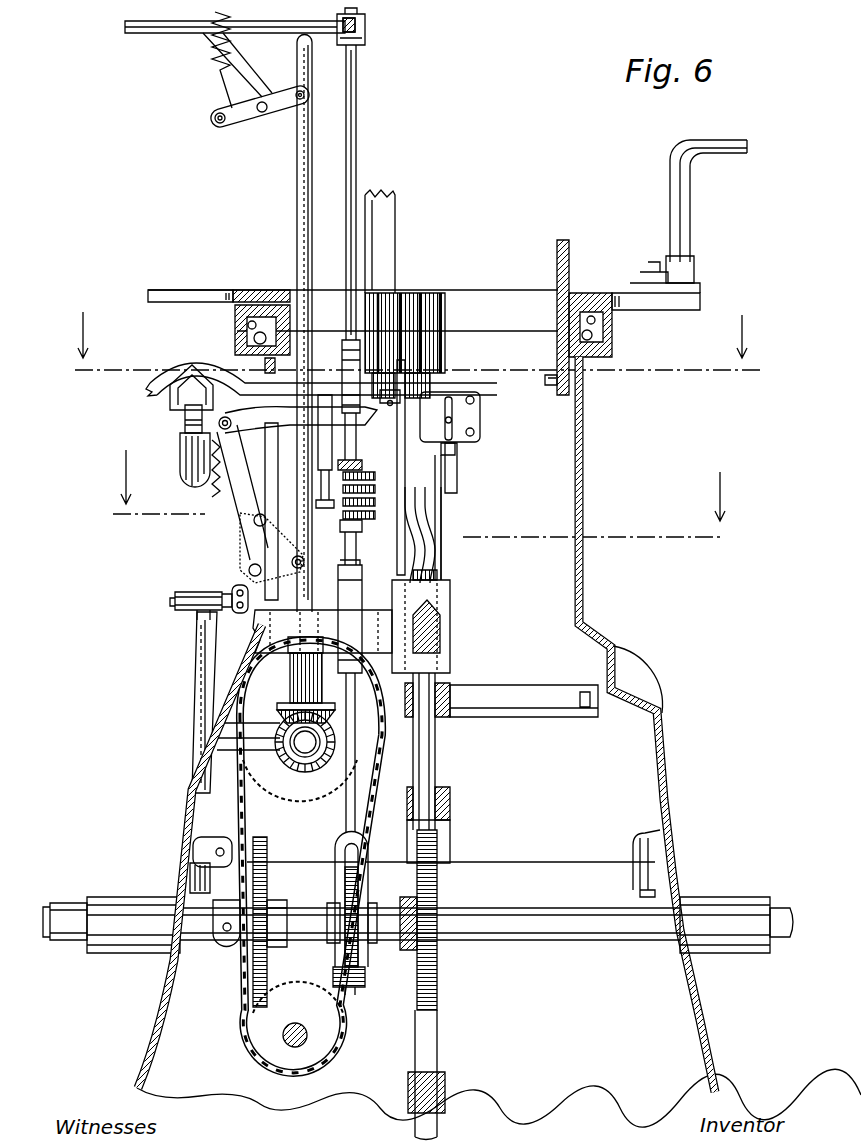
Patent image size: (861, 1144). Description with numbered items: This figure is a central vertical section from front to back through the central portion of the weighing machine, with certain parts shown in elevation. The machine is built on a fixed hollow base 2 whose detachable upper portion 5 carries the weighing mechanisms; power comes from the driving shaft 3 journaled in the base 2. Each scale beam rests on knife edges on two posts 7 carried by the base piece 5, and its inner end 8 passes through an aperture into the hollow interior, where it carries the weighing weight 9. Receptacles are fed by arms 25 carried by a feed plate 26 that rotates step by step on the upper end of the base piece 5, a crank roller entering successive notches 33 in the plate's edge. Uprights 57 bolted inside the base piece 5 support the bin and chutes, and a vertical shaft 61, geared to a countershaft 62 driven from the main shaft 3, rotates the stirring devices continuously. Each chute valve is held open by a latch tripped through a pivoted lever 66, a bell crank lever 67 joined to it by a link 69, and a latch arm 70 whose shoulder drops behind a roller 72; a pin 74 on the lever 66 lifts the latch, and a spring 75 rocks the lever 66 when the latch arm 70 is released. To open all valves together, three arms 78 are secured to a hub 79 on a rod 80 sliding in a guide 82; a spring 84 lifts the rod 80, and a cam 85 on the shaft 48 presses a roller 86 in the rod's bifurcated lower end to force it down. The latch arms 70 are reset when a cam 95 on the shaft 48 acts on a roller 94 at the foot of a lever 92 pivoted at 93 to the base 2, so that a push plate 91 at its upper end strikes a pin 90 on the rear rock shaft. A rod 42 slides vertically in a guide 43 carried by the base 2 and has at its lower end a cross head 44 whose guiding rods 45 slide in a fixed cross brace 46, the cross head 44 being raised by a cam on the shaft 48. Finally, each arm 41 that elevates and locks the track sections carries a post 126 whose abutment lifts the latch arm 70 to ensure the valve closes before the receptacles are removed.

The fixed base 2 is at (692, 1010).
The driving shaft 3 is at (290, 1038).
The upper portion of the base 5 is at (583, 590).
The posts 7 is at (184, 460).
The inner end of the beam 8 is at (320, 394).
The weighing weight 9 is at (437, 310).
The arms 25 is at (690, 230).
The feed plate 26 is at (590, 292).
The notches 33 is at (190, 297).
The arms 41 is at (432, 625).
The rod 42 is at (436, 745).
The guide 43 is at (455, 689).
The cross head 44 is at (436, 790).
The guiding rods 45 is at (438, 1040).
The cross brace 46 is at (445, 1092).
The shaft 48 is at (522, 942).
The uprights 57 is at (557, 262).
The vertical shaft 61 is at (311, 74).
The countershaft 62 is at (305, 760).
The pivoted lever 66 is at (240, 118).
The bell crank lever 67 is at (238, 493).
The link 69 is at (297, 226).
The latch arm 70 is at (255, 393).
The roller 72 is at (460, 425).
The pin 74 is at (218, 121).
The spring 75 is at (214, 60).
The arms 78 is at (273, 33).
The hub 79 is at (365, 30).
The rod 80 is at (356, 150).
The guide 82 is at (355, 530).
The spring 84 is at (362, 502).
The cam 85 is at (356, 905).
The roller 86 is at (356, 990).
The pin 90 is at (232, 613).
The push plate 91 is at (232, 584).
The lever 92 is at (206, 788).
The pivot 93 is at (250, 834).
The roller 94 is at (228, 945).
The cam 95 is at (256, 896).
The post 126 is at (442, 468).